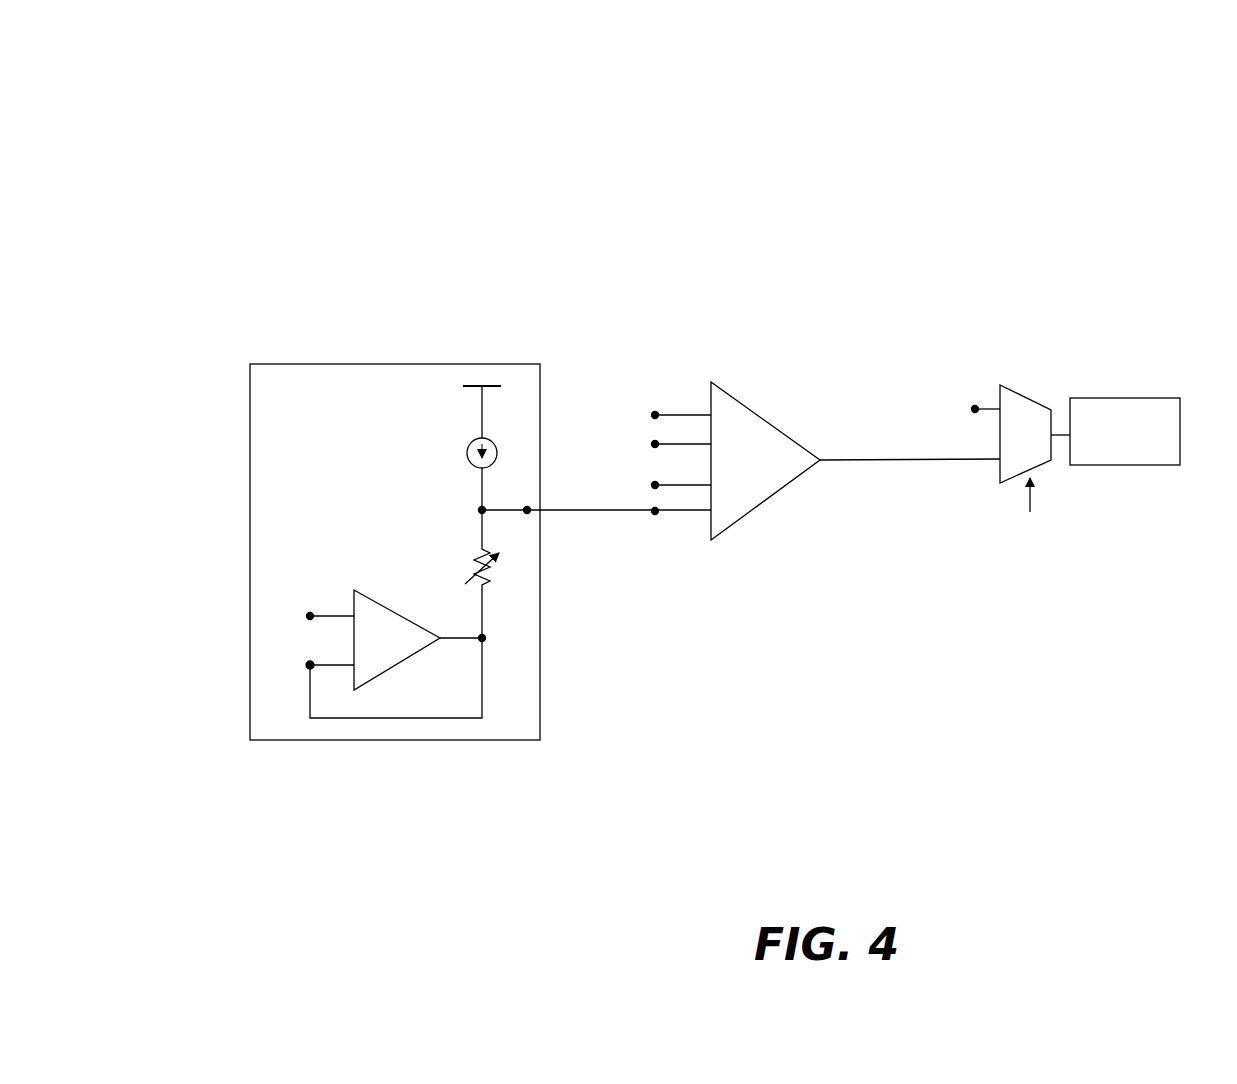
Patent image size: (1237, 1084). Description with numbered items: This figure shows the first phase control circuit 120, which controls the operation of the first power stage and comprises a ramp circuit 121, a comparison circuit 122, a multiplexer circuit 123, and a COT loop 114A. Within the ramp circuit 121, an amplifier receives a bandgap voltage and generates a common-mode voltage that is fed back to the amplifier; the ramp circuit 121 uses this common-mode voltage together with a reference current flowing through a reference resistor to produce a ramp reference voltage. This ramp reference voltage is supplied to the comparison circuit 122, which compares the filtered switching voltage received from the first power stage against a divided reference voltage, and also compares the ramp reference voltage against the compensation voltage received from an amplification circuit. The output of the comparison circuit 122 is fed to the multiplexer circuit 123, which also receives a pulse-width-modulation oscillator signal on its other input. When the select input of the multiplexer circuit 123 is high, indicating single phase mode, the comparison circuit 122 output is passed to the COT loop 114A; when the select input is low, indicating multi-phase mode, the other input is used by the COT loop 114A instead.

The first phase control circuit 120 is at (335, 110).
The ramp circuit 121 is at (388, 364).
The comparison circuit 122 is at (742, 402).
The multiplexer circuit 123 is at (1018, 396).
The COT loop 114A is at (1125, 431).